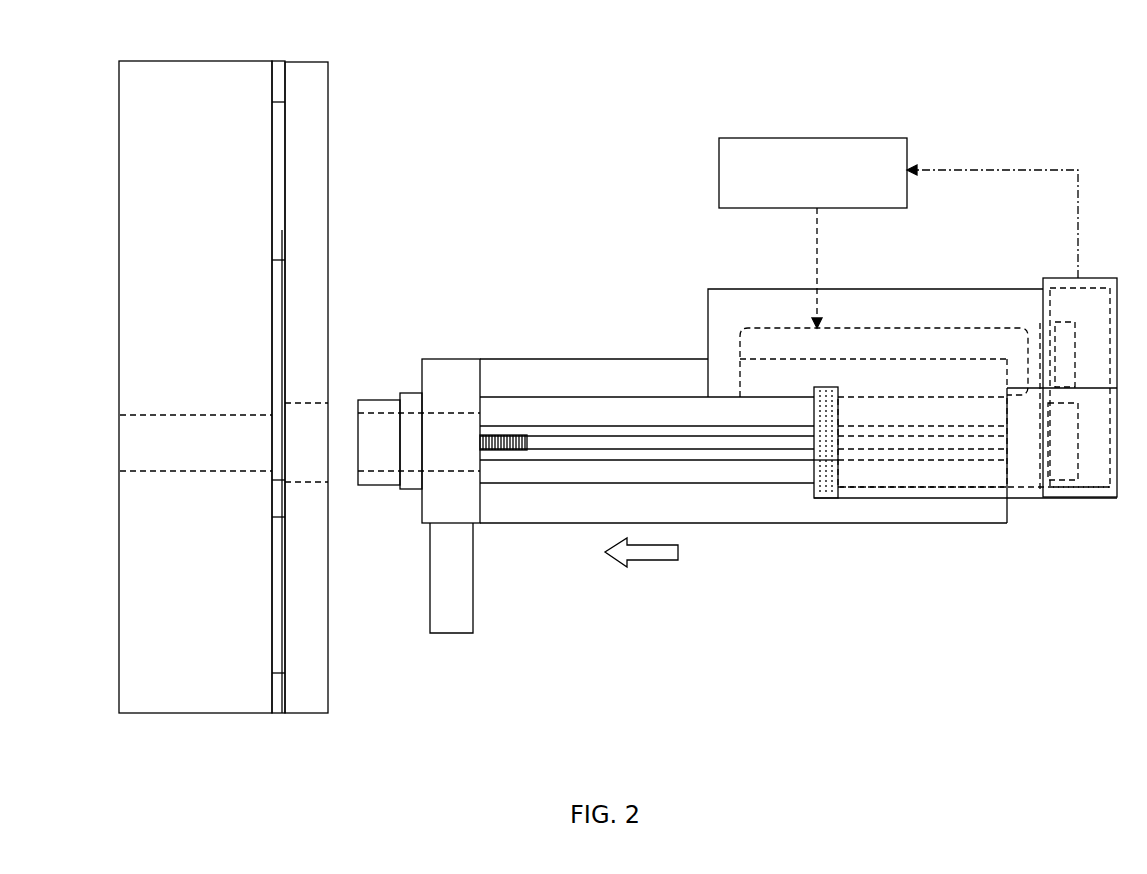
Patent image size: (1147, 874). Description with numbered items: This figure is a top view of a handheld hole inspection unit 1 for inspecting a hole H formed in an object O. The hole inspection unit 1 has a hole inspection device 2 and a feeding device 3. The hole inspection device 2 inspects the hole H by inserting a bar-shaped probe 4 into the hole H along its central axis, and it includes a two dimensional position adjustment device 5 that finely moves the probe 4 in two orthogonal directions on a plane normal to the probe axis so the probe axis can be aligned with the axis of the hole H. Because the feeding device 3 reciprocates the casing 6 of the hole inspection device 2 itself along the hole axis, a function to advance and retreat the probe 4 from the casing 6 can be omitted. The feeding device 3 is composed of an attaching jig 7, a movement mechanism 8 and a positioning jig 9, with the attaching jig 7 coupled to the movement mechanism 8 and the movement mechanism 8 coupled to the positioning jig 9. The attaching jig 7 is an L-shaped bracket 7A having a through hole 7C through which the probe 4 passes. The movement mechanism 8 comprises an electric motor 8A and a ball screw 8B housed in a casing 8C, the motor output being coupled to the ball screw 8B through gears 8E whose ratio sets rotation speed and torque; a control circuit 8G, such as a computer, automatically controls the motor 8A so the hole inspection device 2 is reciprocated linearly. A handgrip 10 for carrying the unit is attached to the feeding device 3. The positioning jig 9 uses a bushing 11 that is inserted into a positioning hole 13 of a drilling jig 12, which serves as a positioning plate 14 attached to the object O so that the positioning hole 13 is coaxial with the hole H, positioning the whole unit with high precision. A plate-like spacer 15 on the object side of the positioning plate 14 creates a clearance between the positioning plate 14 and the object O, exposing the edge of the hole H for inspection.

The hole inspection unit 1 is at (888, 653).
The hole inspection device 2 is at (897, 498).
The feeding device 3 is at (703, 484).
The probe 4 is at (647, 443).
The two dimensional position adjustment device 5 is at (1097, 278).
The casing 6 is at (1022, 500).
The attaching jig 7 is at (834, 498).
The L-shaped bracket 7A is at (830, 500).
The through hole 7C is at (817, 467).
The movement mechanism 8 is at (584, 397).
The electric motor 8A is at (885, 328).
The ball screw 8B is at (502, 447).
The casing 8C is at (663, 407).
The gears 8E is at (1052, 288).
The control circuit 8G is at (719, 175).
The positioning jig 9 is at (387, 397).
The handgrip 10 is at (453, 623).
The bushing 11 is at (373, 478).
The drilling jig 12 is at (316, 607).
The positioning hole 13 is at (343, 407).
The positioning plate 14 is at (328, 230).
The plate-like spacer 15 is at (279, 713).
The object O is at (119, 283).
The hole H is at (120, 440).